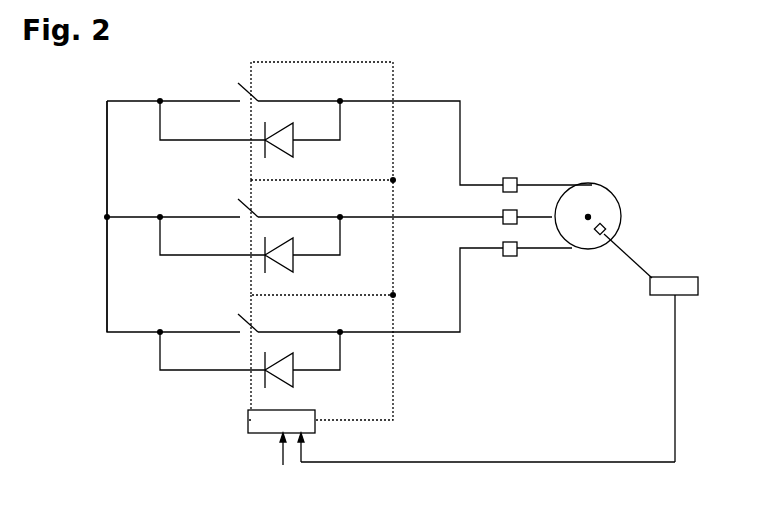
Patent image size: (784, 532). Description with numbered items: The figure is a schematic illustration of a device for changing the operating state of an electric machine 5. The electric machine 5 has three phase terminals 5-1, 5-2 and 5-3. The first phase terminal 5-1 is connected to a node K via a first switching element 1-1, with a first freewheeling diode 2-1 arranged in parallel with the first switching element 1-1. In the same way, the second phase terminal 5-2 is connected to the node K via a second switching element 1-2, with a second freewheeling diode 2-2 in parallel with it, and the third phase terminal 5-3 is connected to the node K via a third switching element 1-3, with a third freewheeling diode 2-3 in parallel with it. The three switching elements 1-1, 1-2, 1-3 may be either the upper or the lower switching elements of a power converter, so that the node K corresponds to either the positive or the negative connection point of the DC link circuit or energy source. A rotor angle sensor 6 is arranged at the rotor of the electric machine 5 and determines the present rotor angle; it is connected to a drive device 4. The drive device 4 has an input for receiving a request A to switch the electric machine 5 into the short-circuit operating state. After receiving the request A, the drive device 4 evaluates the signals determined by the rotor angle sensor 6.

The node K is at (107, 217).
The first switching element 1-1 is at (262, 96).
The second switching element 1-2 is at (262, 212).
The third switching element 1-3 is at (262, 327).
The first freewheeling diode 2-1 is at (293, 149).
The second freewheeling diode 2-2 is at (293, 264).
The third freewheeling diode 2-3 is at (293, 379).
The drive device 4 is at (315, 428).
The request A is at (469, 452).
The electric machine 5 is at (622, 216).
The first phase terminal 5-1 is at (519, 180).
The second phase terminal 5-2 is at (518, 222).
The third phase terminal 5-3 is at (518, 250).
The rotor angle sensor 6 is at (656, 296).